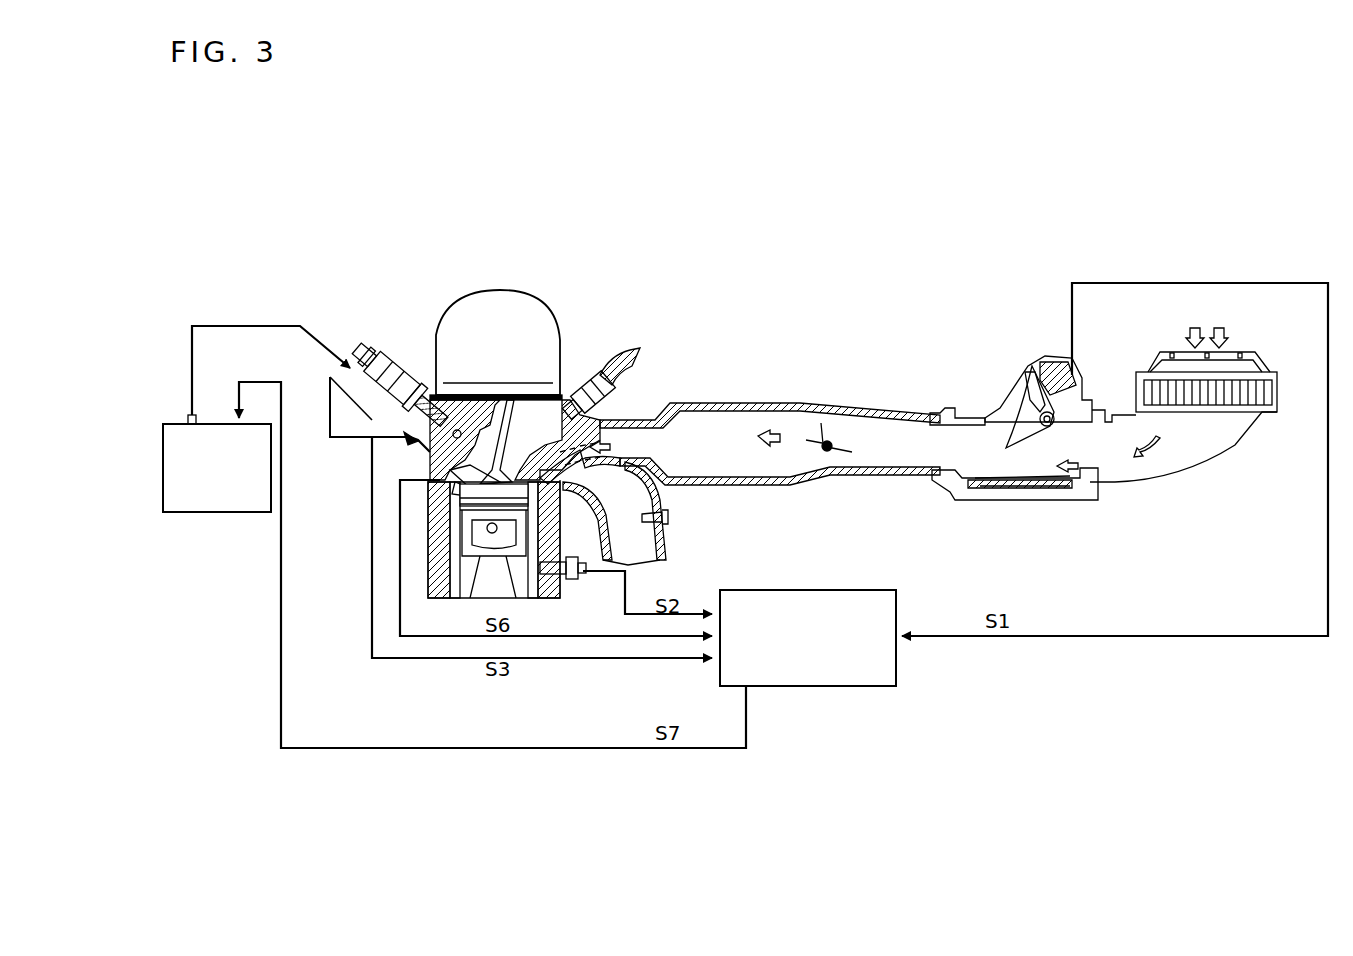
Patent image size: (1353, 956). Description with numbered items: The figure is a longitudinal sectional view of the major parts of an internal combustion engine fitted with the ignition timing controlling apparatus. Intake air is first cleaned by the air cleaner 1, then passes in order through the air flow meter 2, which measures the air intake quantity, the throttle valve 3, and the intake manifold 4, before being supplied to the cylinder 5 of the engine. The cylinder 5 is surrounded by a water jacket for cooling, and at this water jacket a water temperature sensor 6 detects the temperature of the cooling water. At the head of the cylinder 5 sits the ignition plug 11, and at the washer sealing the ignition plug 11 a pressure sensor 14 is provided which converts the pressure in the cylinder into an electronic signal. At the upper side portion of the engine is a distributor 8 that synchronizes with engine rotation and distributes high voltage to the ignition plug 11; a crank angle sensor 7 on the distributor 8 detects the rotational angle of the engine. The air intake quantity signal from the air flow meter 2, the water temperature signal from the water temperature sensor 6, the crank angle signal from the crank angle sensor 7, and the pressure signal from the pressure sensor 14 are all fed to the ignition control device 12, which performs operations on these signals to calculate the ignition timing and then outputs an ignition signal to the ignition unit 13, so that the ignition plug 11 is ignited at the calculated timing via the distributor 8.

The air cleaner 1 is at (1262, 358).
The air flow meter 2 is at (1050, 360).
The throttle valve 3 is at (825, 423).
The intake manifold 4 is at (698, 425).
The cylinder 5 is at (556, 513).
The water temperature sensor 6 is at (580, 578).
The crank angle sensor 7 is at (355, 410).
The distributor 8 is at (388, 358).
The ignition plug 11 is at (440, 462).
The ignition control device 12 is at (897, 601).
The ignition unit 13 is at (163, 424).
The pressure sensor 14 is at (450, 486).